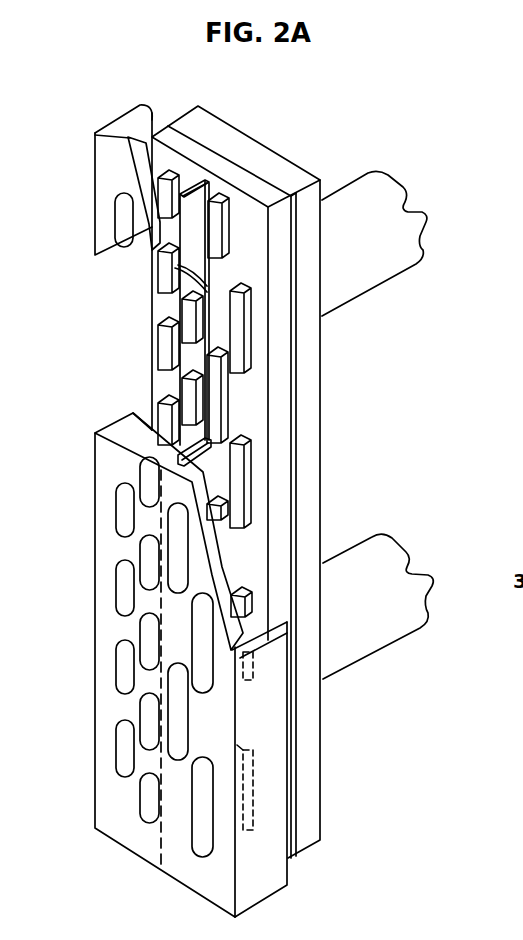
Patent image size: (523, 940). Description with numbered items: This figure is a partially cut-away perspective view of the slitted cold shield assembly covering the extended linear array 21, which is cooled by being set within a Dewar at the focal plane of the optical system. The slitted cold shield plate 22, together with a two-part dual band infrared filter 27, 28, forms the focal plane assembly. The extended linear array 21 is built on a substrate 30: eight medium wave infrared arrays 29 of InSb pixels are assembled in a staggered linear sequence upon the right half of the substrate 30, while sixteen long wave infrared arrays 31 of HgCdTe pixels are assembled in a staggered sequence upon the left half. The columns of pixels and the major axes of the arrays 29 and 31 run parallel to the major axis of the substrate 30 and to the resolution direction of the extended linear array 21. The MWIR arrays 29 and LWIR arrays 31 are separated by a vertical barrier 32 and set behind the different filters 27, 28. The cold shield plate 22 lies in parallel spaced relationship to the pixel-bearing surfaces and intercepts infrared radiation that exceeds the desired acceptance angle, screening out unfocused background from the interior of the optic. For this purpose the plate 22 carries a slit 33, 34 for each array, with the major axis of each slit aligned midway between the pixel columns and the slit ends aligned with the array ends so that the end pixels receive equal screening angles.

The extended linear array 21 is at (292, 481).
The slitted cold shield plate 22 is at (94, 548).
The dual band infrared filter 27 is at (214, 470).
The dual band infrared filter 28 is at (128, 418).
The MWIR 1×128 element arrays 29 is at (233, 397).
The substrate 30 is at (243, 176).
The LWIR 1×64 element arrays 31 is at (150, 322).
The vertical barrier 32 is at (193, 180).
The slit 33 is at (182, 675).
The slit 34 is at (115, 745).